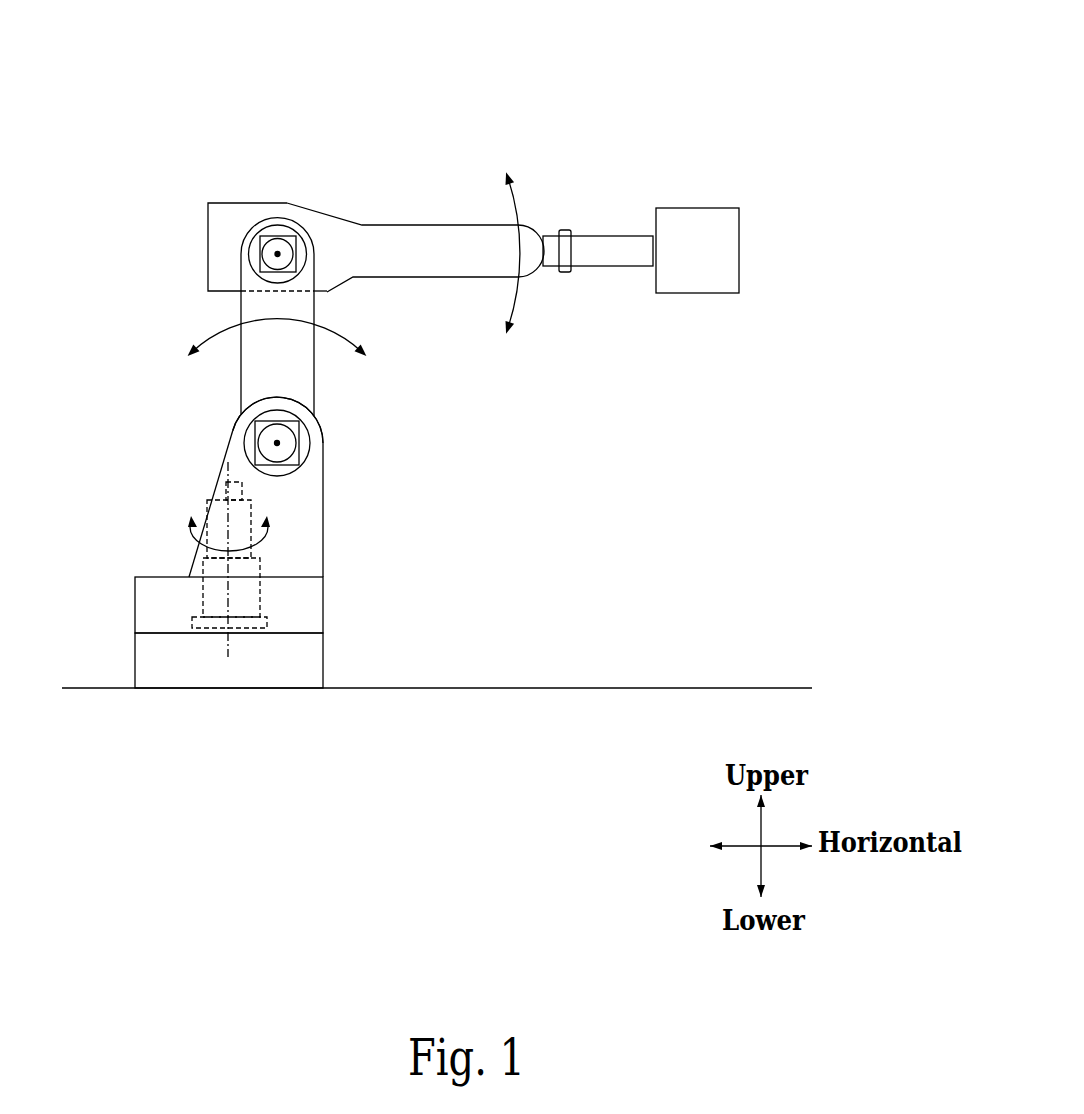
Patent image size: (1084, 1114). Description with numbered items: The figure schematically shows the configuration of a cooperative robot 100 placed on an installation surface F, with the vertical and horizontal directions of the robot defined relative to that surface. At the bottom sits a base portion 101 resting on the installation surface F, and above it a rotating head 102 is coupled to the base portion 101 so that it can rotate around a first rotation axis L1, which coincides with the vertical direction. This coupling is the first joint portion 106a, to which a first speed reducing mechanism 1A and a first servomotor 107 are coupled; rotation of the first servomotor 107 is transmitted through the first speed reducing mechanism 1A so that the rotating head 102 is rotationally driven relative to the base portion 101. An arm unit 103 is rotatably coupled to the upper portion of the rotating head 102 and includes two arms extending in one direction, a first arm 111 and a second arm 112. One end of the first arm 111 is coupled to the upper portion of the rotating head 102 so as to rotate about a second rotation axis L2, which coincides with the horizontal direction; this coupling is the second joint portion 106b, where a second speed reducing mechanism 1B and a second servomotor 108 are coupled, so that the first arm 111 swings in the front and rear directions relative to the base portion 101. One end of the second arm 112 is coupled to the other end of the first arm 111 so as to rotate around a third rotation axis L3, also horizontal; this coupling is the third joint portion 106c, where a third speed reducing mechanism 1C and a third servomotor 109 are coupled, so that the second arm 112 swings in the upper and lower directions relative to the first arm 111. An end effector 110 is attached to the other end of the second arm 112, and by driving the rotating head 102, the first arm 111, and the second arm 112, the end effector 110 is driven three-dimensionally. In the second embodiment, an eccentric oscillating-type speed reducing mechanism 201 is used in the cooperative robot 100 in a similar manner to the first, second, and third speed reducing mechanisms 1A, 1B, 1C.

The cooperative robot 100 is at (629, 108).
The base portion 101 is at (307, 660).
The rotating head 102 is at (307, 545).
The arm unit 103 is at (338, 205).
The first joint portion 106a is at (210, 578).
The second joint portion 106b is at (249, 408).
The third joint portion 106c is at (262, 218).
The first servomotor 107 is at (208, 501).
The second servomotor 108 is at (305, 418).
The third servomotor 109 is at (258, 238).
The end effector 110 is at (695, 225).
The first arm 111 is at (302, 374).
The second arm 112 is at (455, 235).
The first speed reducing mechanism 1A is at (204, 558).
The second speed reducing mechanism 1B is at (292, 466).
The third speed reducing mechanism 1C is at (258, 262).
The speed reducing mechanism 201 is at (216, 370).
The first rotation axis L1 is at (230, 429).
The second rotation axis L2 is at (282, 443).
The third rotation axis L3 is at (278, 253).
The installation surface F is at (700, 686).